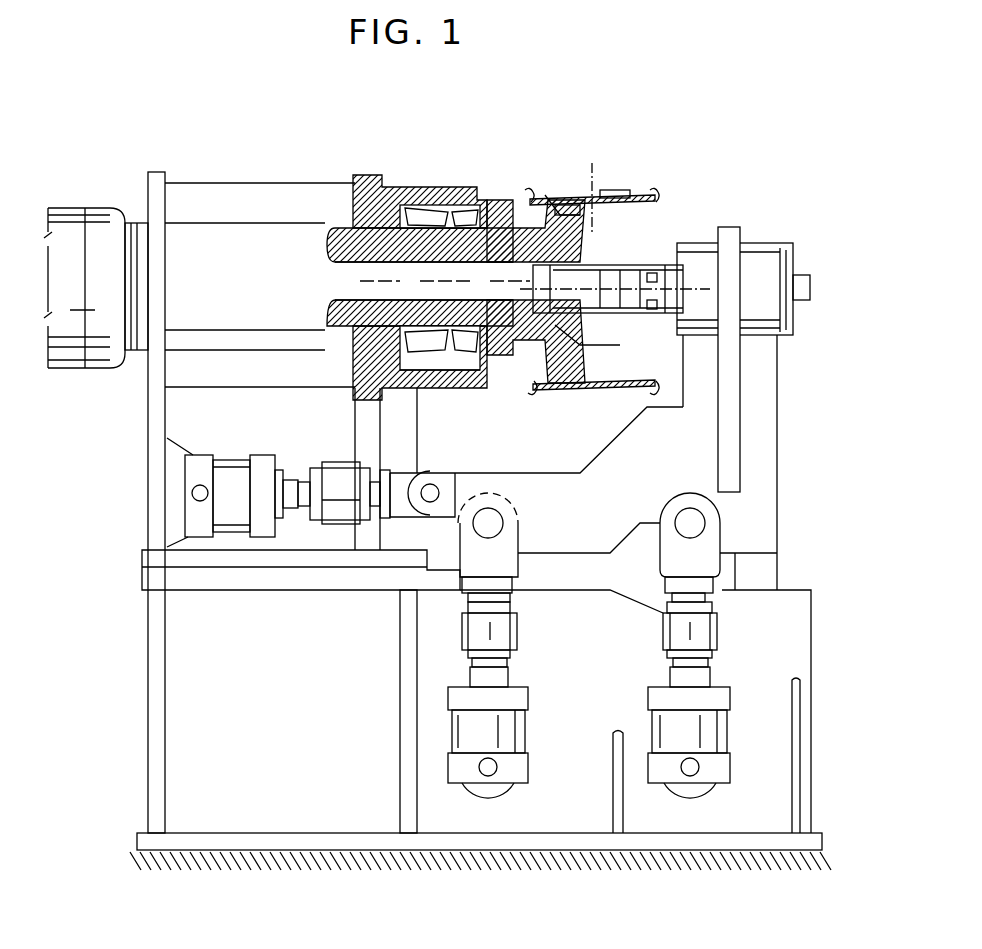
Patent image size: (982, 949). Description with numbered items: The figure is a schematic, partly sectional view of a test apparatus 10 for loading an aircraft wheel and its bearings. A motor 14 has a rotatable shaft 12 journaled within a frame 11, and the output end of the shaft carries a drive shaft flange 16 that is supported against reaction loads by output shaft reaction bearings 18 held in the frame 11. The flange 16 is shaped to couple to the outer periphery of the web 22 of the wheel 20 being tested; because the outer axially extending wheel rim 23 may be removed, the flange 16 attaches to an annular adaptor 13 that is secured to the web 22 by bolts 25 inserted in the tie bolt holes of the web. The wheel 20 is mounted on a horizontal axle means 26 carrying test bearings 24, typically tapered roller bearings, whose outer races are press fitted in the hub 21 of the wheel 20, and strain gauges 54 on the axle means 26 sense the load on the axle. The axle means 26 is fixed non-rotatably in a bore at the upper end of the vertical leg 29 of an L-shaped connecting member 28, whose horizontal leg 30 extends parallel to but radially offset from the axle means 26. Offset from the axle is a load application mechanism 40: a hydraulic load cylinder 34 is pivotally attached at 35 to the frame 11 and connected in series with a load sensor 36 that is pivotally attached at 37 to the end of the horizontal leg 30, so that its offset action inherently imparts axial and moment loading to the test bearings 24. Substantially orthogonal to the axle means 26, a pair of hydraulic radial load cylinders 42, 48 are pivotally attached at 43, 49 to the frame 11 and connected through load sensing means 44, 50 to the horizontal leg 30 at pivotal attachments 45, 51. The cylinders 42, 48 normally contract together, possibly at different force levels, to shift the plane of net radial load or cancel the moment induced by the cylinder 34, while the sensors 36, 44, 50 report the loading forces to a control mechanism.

The test apparatus 10 is at (632, 254).
The frame 11 is at (362, 175).
The rotatable shaft 12 is at (390, 227).
The annular adaptor 13 is at (552, 200).
The motor 14 is at (62, 215).
The drive shaft flange 16 is at (502, 228).
The output shaft reaction bearings 18 is at (440, 187).
The wheel 20 is at (665, 210).
The hub 21 is at (642, 246).
The web 22 is at (568, 200).
The outer axially extending wheel rim 23 is at (625, 192).
The test bearings 24 is at (600, 322).
The bolts 25 is at (512, 218).
The axle means 26 is at (658, 277).
The L-shaped connecting member 28 is at (754, 408).
The vertical leg 29 is at (766, 400).
The horizontal leg 30 is at (557, 480).
The hydraulic load cylinder 34 is at (181, 472).
The pivotal attachment 35 is at (193, 497).
The load sensor 36 is at (336, 478).
The pivotal attachment 37 is at (432, 485).
The load application mechanism 40 is at (556, 661).
The hydraulic radial load cylinder 42 is at (711, 758).
The pivotal attachment 43 is at (694, 772).
The load sensing means 44 is at (720, 635).
The pivotal attachment 45 is at (695, 523).
The hydraulic radial load cylinder 48 is at (517, 754).
The pivotal attachment 49 is at (492, 772).
The load sensing means 50 is at (515, 635).
The pivotal attachment 51 is at (492, 523).
The strain gauges 54 is at (660, 302).